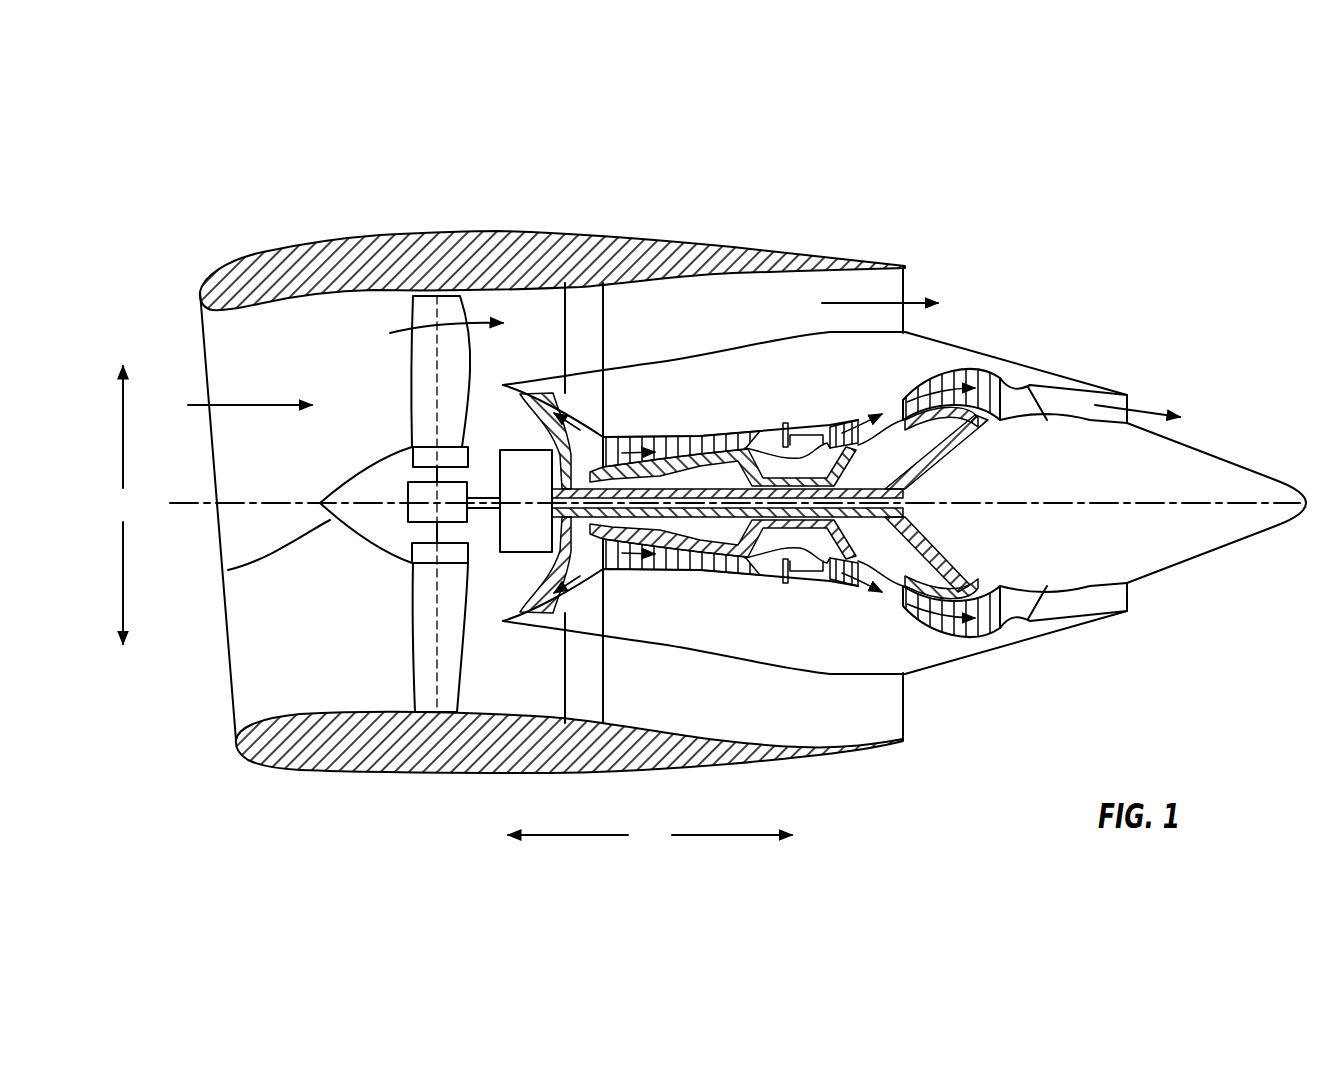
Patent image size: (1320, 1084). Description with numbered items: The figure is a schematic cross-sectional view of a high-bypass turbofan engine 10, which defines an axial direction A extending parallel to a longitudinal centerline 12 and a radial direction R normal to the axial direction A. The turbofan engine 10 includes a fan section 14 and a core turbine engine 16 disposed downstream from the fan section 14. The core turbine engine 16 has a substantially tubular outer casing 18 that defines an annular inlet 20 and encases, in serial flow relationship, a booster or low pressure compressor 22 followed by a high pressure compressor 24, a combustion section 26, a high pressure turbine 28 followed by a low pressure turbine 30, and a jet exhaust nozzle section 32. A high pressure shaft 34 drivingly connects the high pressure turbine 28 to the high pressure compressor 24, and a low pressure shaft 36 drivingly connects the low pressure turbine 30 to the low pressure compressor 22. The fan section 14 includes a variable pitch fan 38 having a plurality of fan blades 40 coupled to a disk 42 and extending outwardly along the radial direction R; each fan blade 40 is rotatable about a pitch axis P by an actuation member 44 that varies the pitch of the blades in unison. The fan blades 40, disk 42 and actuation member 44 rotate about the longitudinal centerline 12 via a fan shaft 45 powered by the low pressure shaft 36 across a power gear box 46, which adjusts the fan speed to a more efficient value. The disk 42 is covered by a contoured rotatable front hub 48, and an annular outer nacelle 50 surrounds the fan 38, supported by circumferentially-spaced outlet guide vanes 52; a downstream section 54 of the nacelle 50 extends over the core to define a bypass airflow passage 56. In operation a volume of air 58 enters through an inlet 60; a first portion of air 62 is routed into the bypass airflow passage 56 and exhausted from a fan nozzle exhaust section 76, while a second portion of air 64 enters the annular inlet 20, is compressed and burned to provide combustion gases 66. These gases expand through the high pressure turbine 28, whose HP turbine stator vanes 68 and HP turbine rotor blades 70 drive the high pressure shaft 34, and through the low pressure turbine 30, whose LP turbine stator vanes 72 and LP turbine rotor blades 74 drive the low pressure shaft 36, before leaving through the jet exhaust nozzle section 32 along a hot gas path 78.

The turbofan engine 10 is at (1047, 243).
The longitudinal centerline 12 is at (1073, 503).
The fan section 14 is at (369, 320).
The core turbine engine 16 is at (722, 390).
The outer casing 18 is at (758, 668).
The annular inlet 20 is at (515, 605).
The low pressure compressor 22 is at (556, 567).
The high pressure compressor 24 is at (632, 560).
The combustion section 26 is at (802, 575).
The high pressure turbine 28 is at (866, 575).
The low pressure turbine 30 is at (988, 630).
The jet exhaust nozzle section 32 is at (1045, 613).
The high pressure shaft 34 is at (836, 468).
The low pressure shaft 36 is at (945, 460).
The variable pitch fan 38 is at (377, 557).
The fan blades 40 is at (410, 652).
The disk 42 is at (413, 457).
The actuation member 44 is at (410, 488).
The fan shaft 45 is at (481, 496).
The power gear box 46 is at (535, 468).
The front hub 48 is at (228, 570).
The outer nacelle 50 is at (458, 775).
The outlet guide vanes 52 is at (603, 313).
The downstream section 54 is at (847, 263).
The bypass airflow passage 56 is at (780, 323).
The volume of air 58 is at (252, 400).
The inlet 60 is at (230, 718).
The first portion of air 62 is at (427, 335).
The second portion of air 64 is at (500, 385).
The combustion gases 66 is at (847, 425).
The HP turbine stator vanes 68 is at (818, 573).
The HP turbine rotor blades 70 is at (907, 528).
The LP turbine stator vanes 72 is at (910, 615).
The LP turbine rotor blades 74 is at (920, 617).
The fan nozzle exhaust section 76 is at (892, 292).
The hot gas path 78 is at (886, 408).
The pitch axis P is at (508, 253).
The radial direction R is at (122, 505).
The axial direction A is at (650, 835).